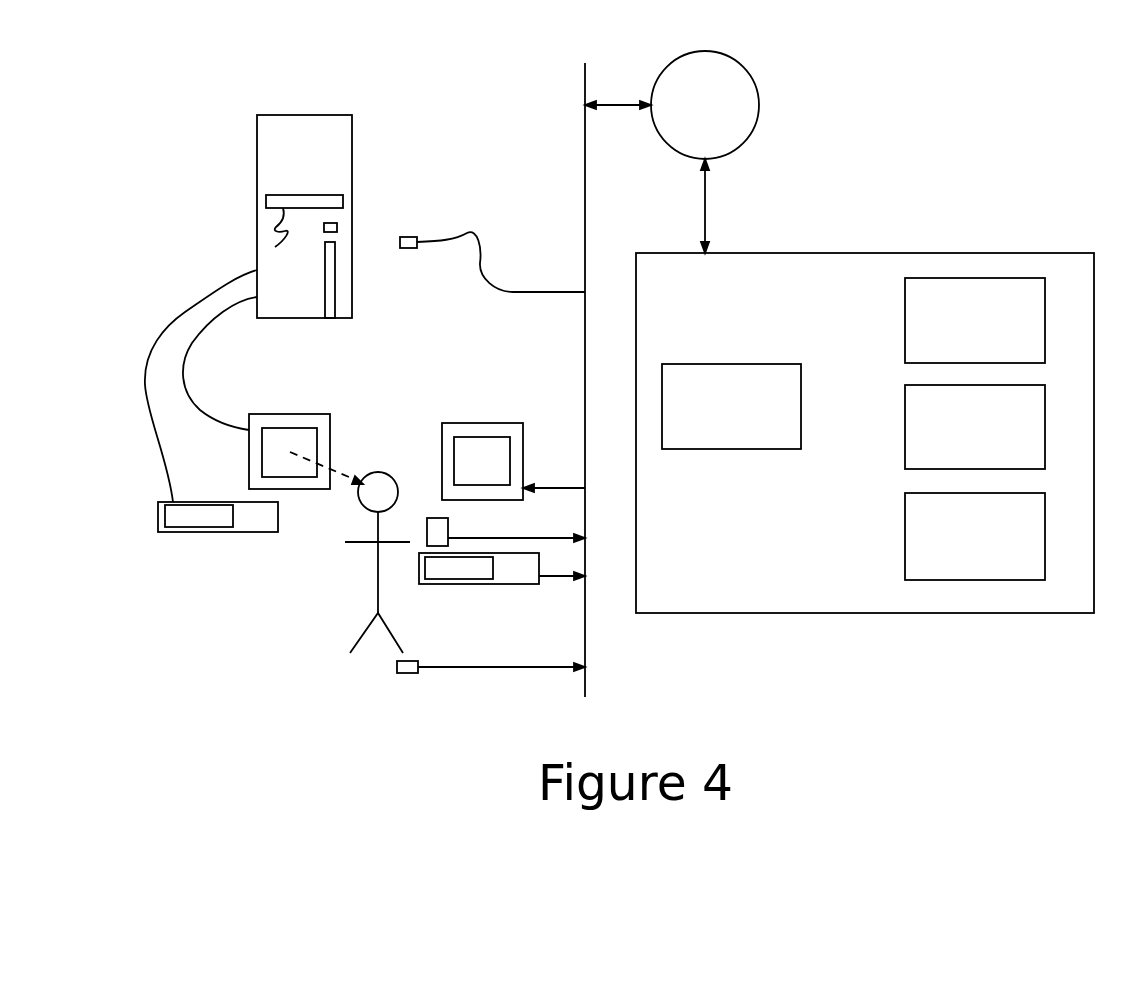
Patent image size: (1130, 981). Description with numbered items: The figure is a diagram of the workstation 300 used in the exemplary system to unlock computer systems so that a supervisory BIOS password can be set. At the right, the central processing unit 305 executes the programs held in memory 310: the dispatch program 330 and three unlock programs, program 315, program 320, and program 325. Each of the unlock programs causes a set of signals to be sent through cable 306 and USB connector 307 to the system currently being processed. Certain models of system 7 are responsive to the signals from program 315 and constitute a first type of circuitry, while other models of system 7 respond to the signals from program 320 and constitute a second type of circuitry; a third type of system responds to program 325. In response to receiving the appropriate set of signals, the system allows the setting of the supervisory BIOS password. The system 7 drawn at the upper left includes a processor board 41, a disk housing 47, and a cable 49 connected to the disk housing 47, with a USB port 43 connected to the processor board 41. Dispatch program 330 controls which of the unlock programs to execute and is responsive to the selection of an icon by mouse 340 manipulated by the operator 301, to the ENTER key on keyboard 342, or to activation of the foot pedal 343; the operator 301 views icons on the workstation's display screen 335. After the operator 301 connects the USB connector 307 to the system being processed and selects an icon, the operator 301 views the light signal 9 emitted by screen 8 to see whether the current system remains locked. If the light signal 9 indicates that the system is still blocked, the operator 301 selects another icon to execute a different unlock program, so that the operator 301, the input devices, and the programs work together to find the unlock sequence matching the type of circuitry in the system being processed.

The system 7 is at (275, 115).
The disk housing 47 is at (283, 195).
The cable 49 is at (270, 226).
The USB port 43 is at (324, 227).
The processor board 41 is at (336, 299).
The USB connector 307 is at (407, 237).
The cable 306 is at (484, 259).
The screen 8 is at (295, 414).
The light signal 9 is at (175, 522).
The operator 301 is at (360, 508).
The display screen 335 is at (515, 423).
The mouse 340 is at (432, 518).
The keyboard 342 is at (436, 575).
The foot pedal 343 is at (400, 673).
The central processing unit 305 is at (672, 152).
The memory 310 is at (865, 433).
The program 315 is at (975, 320).
The program 320 is at (975, 427).
The program 325 is at (975, 536).
The dispatch program 330 is at (731, 406).
The workstation 300 is at (708, 704).